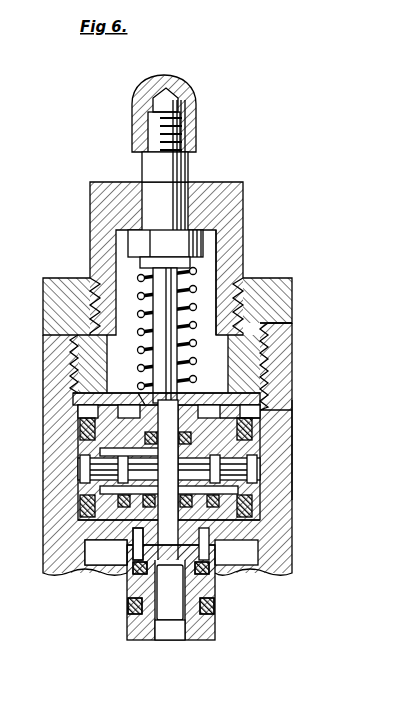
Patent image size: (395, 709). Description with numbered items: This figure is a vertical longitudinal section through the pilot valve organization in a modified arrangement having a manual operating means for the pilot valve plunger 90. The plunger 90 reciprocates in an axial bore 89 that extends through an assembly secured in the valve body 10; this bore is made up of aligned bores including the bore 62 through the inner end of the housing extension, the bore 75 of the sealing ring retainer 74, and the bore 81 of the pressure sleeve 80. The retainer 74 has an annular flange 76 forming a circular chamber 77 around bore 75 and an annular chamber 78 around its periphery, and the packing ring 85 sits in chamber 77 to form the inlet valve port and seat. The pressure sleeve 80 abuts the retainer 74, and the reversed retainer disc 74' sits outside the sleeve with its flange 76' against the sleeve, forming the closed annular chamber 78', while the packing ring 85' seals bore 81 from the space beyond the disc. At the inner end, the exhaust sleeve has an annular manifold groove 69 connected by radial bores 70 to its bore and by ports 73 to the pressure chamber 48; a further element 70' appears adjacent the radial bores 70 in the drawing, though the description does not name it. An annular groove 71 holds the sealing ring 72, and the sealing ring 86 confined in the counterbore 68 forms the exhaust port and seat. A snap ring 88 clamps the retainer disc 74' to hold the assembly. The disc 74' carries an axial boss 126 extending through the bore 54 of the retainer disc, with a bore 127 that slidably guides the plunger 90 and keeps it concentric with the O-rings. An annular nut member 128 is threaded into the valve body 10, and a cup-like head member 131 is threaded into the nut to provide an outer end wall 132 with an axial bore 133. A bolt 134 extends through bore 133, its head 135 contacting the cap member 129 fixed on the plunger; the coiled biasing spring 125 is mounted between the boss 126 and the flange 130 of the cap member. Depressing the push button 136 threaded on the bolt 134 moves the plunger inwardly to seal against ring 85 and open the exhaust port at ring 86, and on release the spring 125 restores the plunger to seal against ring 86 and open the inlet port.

The push button 136 is at (188, 88).
The bolt 134 is at (160, 168).
The axial bore 133 is at (190, 198).
The outer end wall 132 is at (214, 195).
The cup-like head member 131 is at (243, 197).
The bolt head 135 is at (137, 243).
The coiled biasing spring 125 is at (139, 277).
The annular shoulder or flange 130 is at (189, 261).
The cap member 129 is at (168, 288).
The pilot valve plunger 90 is at (75, 330).
The annular nut member 128 is at (278, 315).
The axial boss 126 is at (258, 372).
The axial bore 54 is at (138, 392).
The axial bore 127 is at (110, 396).
The snap ring 88 is at (105, 414).
The closed annular chamber 78' is at (52, 429).
The annular flange 76' is at (85, 450).
The axial bore 81 is at (108, 471).
The annular flange 76 is at (85, 489).
The annular chamber 78 is at (172, 473).
The packing ring 85 is at (170, 511).
The packing ring 85' is at (239, 435).
The sealing ring retainer 74 is at (135, 470).
The retainer disc 74' is at (275, 408).
The axial bore 75 is at (128, 549).
The pressure chamber 48 is at (92, 553).
The ports 73 is at (147, 545).
The radial bores 70 is at (230, 584).
The post 70' is at (118, 560).
The annular groove 71 is at (148, 572).
The sealing ring 72 is at (151, 582).
The axial bore 62 is at (172, 628).
The circular chamber 77 is at (256, 478).
The pressure sleeve 80 is at (262, 452).
The valve body 10 is at (288, 466).
The annular manifold groove 69 is at (203, 554).
The axial bore 89 is at (205, 574).
The counterbore 68 is at (186, 592).
The sealing ring 86 is at (208, 605).